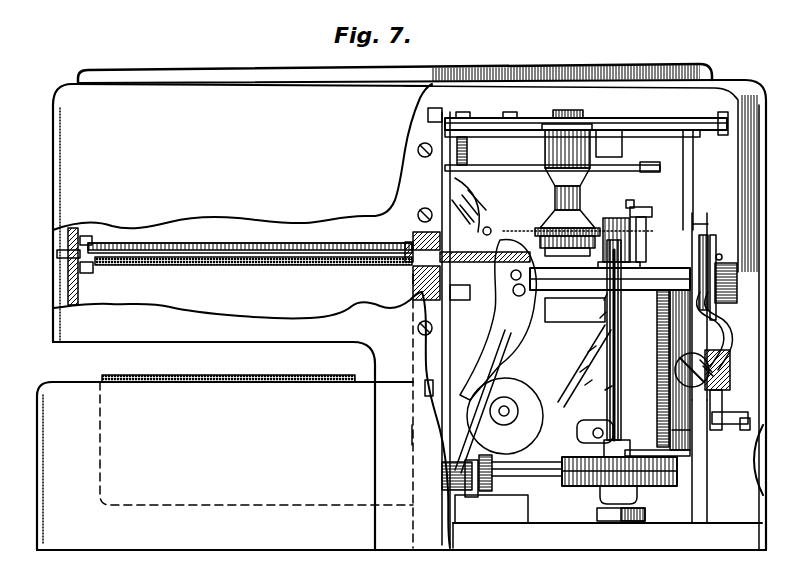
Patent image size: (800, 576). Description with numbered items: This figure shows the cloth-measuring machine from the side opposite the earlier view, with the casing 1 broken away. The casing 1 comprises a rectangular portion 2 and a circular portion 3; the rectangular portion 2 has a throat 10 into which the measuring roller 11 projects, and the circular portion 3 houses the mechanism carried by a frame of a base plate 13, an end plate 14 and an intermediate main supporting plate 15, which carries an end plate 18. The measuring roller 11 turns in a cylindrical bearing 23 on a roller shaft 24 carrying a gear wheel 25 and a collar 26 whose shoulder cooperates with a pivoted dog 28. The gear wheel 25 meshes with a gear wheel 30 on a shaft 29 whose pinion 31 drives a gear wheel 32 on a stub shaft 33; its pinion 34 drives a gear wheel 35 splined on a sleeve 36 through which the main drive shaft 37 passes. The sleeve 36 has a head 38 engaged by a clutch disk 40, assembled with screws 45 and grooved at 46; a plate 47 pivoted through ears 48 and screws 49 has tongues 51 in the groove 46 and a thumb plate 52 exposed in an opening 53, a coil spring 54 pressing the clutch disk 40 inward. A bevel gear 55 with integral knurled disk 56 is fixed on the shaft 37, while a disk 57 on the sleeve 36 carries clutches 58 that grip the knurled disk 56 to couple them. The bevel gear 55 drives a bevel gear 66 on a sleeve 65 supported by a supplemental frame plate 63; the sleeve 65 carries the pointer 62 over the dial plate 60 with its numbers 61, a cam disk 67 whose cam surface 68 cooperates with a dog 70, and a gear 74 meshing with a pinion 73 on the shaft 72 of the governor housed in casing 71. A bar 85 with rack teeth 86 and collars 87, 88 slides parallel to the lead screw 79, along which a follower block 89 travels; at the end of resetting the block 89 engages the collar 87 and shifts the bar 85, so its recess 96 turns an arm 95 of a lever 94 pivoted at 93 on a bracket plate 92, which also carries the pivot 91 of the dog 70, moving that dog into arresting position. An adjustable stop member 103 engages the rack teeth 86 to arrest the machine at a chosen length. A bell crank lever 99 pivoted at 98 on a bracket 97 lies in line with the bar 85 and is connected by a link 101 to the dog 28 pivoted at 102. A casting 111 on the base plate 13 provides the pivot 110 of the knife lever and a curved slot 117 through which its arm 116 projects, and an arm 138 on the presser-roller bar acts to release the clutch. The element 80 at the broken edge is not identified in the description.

The casing 1 is at (770, 280).
The rectangular portion 2 is at (264, 84).
The circular portion 3 is at (610, 80).
The throat 10 is at (70, 362).
The measuring roller 11 is at (166, 381).
The base plate 13 is at (524, 540).
The end plate 14 is at (699, 470).
The intermediate plate 15 is at (413, 279).
The end plate 18 is at (84, 276).
The cylindrical bearing 23 is at (256, 424).
The roller shaft 24 is at (510, 417).
The gear wheel 25 is at (505, 416).
The collar 26 is at (412, 435).
The pivoted dog 28 is at (472, 500).
The shaft 29 is at (543, 470).
The gear wheel 30 is at (492, 476).
The pinion 31 is at (676, 461).
The gear wheel 32 is at (670, 392).
The stub shaft 33 is at (657, 373).
The pinion 34 is at (688, 418).
The gear wheel 35 is at (696, 220).
The sleeve 36 is at (621, 348).
The shaft 37 is at (604, 300).
The head 38 is at (740, 298).
The clutch disk 40 is at (716, 252).
The screws 45 is at (722, 257).
The circumferential groove 46 is at (708, 236).
The plate 47 is at (722, 400).
The ears 48 is at (730, 377).
The screws 49 is at (710, 364).
The tongues 51 is at (722, 310).
The thumb plate 52 is at (759, 466).
The opening 53 is at (604, 340).
The coil spring 54 is at (749, 415).
The bevel gear 55 is at (600, 318).
The knurled disk 56 is at (569, 320).
The disk 57 is at (642, 237).
The clutches 58 is at (632, 204).
The dial plate 60 is at (653, 120).
The numbers 61 is at (503, 118).
The pointer 62 is at (539, 118).
The supplemental frame plate 63 is at (570, 291).
The sleeve 65 is at (581, 200).
The bevel gear 66 is at (489, 227).
The cam disk 67 is at (621, 160).
The cam surface 68 is at (660, 165).
The dog 70 is at (506, 167).
The governor casing 71 is at (572, 486).
The shaft 72 is at (607, 373).
The pinion 73 is at (619, 229).
The gear 74 is at (546, 232).
The lead screw 79 is at (243, 243).
The post 80 is at (428, 138).
The bar 85 is at (57, 256).
The rack teeth 86 is at (362, 243).
The collar 87 is at (70, 238).
The collar 88 is at (395, 226).
The follower block 89 is at (87, 234).
The pivot 91 is at (467, 150).
The bracket plate 92 is at (481, 202).
The pivot 93 is at (426, 328).
The lever 94 is at (458, 211).
The arm 95 is at (482, 277).
The recess 96 is at (365, 297).
The bracket 97 is at (484, 401).
The pivot 98 is at (498, 320).
The bell crank lever 99 is at (457, 292).
The link 101 is at (425, 389).
The pivot 102 is at (483, 488).
The adjustable stop member 103 is at (110, 268).
The pivot 110 is at (585, 385).
The casting 111 is at (588, 352).
The arm 116 is at (593, 436).
The curved slot 117 is at (605, 390).
The arm 138 is at (580, 372).